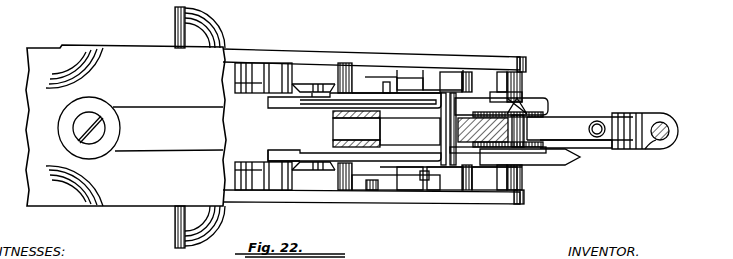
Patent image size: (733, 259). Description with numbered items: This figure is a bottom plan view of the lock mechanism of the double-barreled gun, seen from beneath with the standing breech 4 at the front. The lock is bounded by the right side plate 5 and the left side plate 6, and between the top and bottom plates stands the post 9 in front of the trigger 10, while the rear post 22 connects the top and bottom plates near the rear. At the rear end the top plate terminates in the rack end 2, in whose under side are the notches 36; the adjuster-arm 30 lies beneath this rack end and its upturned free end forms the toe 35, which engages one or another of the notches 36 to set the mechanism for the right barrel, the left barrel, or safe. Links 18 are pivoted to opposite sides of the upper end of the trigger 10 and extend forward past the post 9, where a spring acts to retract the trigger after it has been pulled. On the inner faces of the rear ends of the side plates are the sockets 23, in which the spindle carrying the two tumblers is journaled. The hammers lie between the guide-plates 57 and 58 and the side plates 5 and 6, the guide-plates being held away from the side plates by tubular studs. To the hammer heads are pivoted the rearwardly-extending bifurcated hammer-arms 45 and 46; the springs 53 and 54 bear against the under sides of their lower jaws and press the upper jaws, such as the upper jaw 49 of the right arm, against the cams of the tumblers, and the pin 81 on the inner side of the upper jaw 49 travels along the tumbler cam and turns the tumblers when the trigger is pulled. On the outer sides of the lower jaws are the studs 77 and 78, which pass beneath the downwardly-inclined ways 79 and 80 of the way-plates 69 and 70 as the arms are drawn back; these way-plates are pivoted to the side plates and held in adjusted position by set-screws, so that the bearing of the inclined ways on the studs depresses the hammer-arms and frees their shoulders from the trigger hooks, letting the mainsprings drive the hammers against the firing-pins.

The rack end of the top plate 2 is at (603, 119).
The standing breech 4 is at (175, 21).
The right side plate 5 is at (318, 200).
The left side plate 6 is at (403, 60).
The post 9 is at (330, 134).
The trigger 10 is at (521, 108).
The links 18 is at (422, 116).
The rear post 22 is at (661, 120).
The sockets 23 is at (523, 76).
The adjuster-arm 30 is at (614, 143).
The toe 35 is at (648, 149).
The notches 36 is at (632, 120).
The right hammer-arm 45 is at (330, 157).
The left hammer-arm 46 is at (322, 105).
The upper jaw of right hammer-arm 49 is at (543, 158).
The right spring 53 is at (363, 157).
The left spring 54 is at (345, 100).
The right guide-plate 57 is at (242, 160).
The left guide-plate 58 is at (251, 87).
The right way-plate 69 is at (497, 180).
The left way-plate 70 is at (447, 73).
The right stud 77 is at (460, 182).
The left stud 78 is at (387, 82).
The right inclined way 79 is at (410, 177).
The left inclined way 80 is at (416, 84).
The pin 81 is at (549, 140).